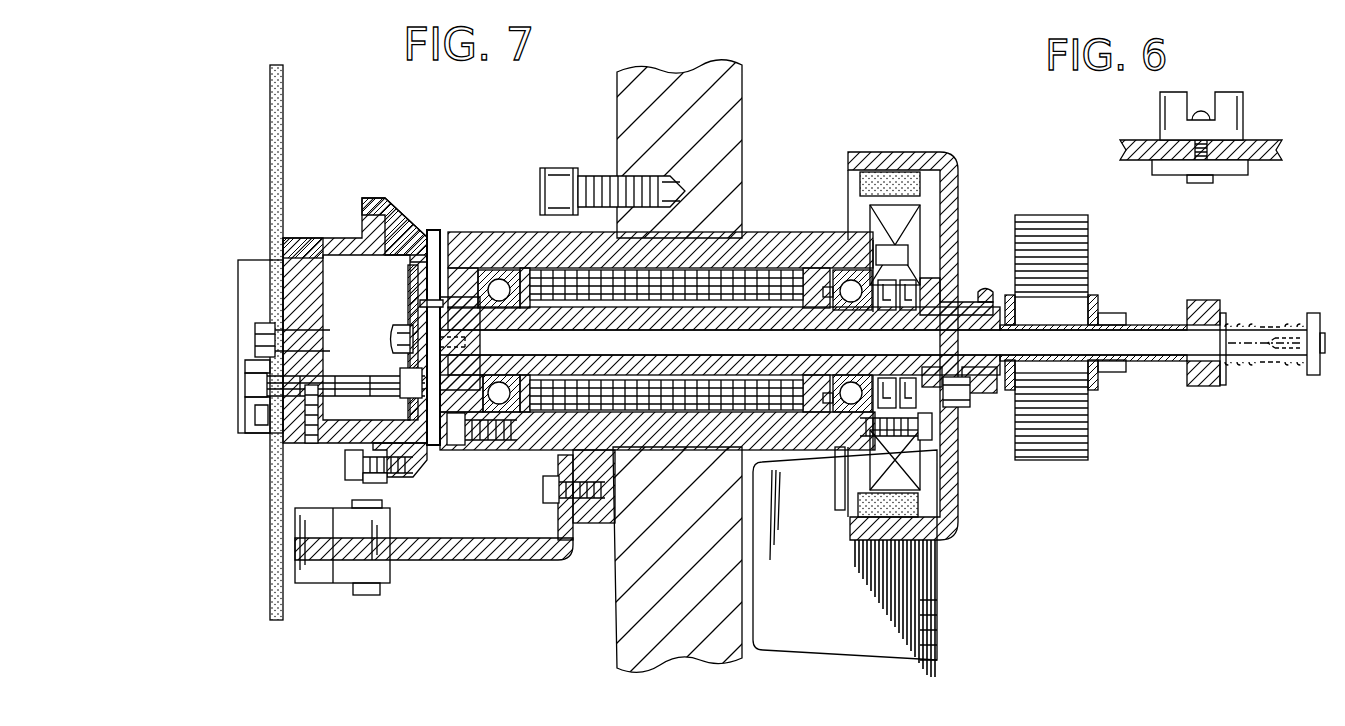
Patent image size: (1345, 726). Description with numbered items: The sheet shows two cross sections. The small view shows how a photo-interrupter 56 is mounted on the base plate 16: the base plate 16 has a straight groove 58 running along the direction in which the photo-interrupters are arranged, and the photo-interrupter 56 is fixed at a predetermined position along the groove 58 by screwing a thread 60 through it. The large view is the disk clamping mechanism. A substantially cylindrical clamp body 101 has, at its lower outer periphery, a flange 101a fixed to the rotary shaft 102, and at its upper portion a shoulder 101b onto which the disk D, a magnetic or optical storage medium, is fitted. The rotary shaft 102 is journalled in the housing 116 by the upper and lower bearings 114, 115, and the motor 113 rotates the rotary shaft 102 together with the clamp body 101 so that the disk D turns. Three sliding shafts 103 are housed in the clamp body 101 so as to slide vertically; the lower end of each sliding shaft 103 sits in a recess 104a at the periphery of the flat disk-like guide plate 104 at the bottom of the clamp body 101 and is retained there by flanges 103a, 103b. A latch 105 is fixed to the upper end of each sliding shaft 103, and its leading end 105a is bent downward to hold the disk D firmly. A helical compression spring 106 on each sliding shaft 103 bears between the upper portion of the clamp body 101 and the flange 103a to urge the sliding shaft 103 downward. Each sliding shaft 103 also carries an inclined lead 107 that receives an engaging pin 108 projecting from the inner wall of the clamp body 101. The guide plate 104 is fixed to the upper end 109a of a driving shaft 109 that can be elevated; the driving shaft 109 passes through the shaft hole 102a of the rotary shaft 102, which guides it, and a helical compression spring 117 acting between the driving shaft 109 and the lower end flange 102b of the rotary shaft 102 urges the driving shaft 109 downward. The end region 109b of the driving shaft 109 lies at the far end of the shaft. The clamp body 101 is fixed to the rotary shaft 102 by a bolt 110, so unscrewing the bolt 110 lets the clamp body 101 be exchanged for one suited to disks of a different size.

In FIG. 7, the disk D is at (284, 137).
In FIG. 7, the clamp body 101 is at (344, 238).
In FIG. 7, the flange 101a is at (365, 205).
In FIG. 7, the shoulder 101b is at (297, 245).
In FIG. 7, the rotary shaft 102 is at (455, 235).
In FIG. 7, the shaft hole 102a is at (938, 292).
In FIG. 7, the lower end flange 102b is at (1220, 305).
In FIG. 7, the sliding shaft 103 is at (263, 378).
In FIG. 7, the flange 103a is at (440, 437).
In FIG. 7, the flange 103b is at (443, 462).
In FIG. 7, the guide plate 104 is at (432, 232).
In FIG. 7, the recess 104a is at (410, 363).
In FIG. 7, the latch 105 is at (257, 403).
In FIG. 7, the leading end 105a is at (267, 432).
In FIG. 7, the helical compression spring 106 is at (327, 337).
In FIG. 7, the lead 107 is at (258, 367).
In FIG. 7, the engaging pin 108 is at (308, 443).
In FIG. 7, the driving shaft 109 is at (550, 345).
In FIG. 7, the upper end of driving shaft 109a is at (410, 285).
In FIG. 7, the shaft end spring 109b is at (1288, 390).
In FIG. 7, the bolt 110 is at (357, 480).
In FIG. 7, the motor 113 is at (962, 185).
In FIG. 7, the upper bearing 114 is at (499, 285).
In FIG. 7, the lower bearing 115 is at (850, 288).
In FIG. 7, the housing 116 is at (588, 170).
In FIG. 7, the helical compression spring 117 is at (1228, 365).
In FIG. 6, the base plate 16 is at (1270, 141).
In FIG. 6, the photo-interrupter 56 is at (1245, 120).
In FIG. 6, the groove 58 is at (1193, 165).
In FIG. 6, the thread 60 is at (1205, 112).